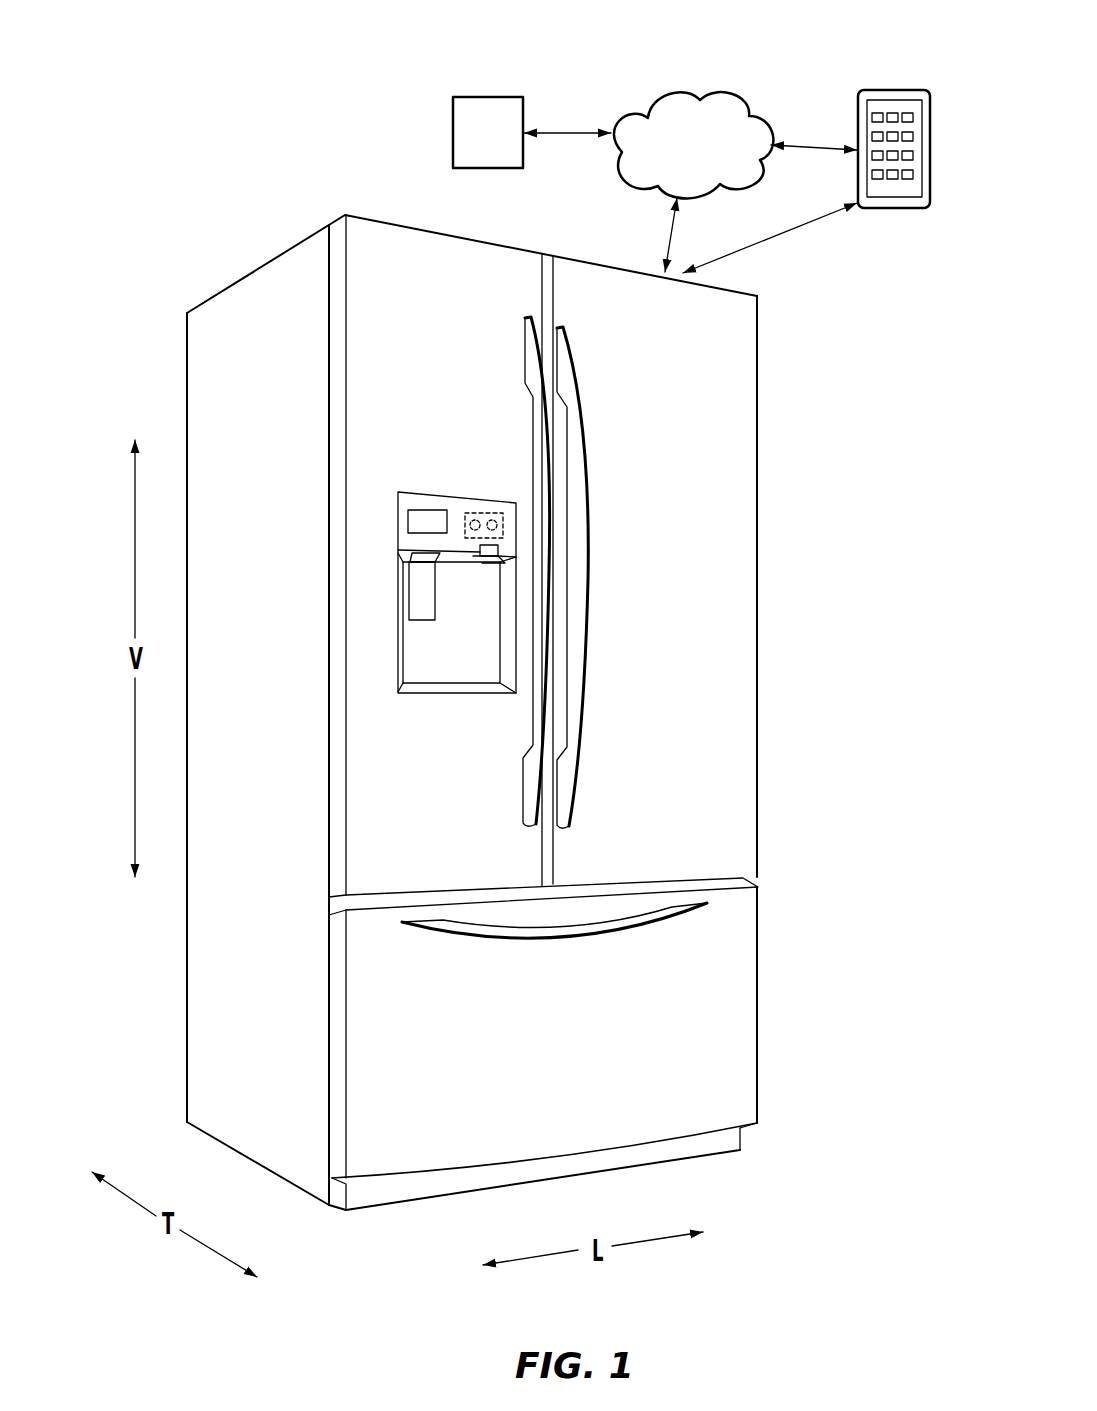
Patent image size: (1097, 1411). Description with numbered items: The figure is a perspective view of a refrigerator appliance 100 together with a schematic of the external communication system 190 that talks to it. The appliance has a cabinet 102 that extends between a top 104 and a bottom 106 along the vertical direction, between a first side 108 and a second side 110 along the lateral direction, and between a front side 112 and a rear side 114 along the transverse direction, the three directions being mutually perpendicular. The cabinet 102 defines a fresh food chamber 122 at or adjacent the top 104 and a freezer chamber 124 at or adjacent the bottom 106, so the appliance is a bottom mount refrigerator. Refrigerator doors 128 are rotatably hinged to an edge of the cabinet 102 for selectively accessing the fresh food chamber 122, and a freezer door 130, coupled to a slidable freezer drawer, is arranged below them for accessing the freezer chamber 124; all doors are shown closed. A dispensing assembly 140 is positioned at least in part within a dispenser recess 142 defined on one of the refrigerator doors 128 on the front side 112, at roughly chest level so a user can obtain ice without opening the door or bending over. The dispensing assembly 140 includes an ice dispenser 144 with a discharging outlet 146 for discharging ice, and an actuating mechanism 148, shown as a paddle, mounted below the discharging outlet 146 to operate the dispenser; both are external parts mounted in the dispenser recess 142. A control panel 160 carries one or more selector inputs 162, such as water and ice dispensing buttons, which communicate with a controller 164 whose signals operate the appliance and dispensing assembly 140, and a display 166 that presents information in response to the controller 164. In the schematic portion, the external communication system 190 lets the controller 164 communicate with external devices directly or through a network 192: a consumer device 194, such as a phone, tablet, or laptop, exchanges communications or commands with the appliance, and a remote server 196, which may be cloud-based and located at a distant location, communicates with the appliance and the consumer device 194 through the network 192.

The refrigerator appliance 100 is at (466, 691).
The cabinet 102 is at (460, 767).
The top 104 is at (442, 264).
The bottom 106 is at (431, 1120).
The first side 108 is at (543, 768).
The second side 110 is at (793, 1171).
The front side 112 is at (307, 767).
The rear side 114 is at (130, 732).
The fresh food chamber 122 is at (645, 572).
The freezer chamber 124 is at (596, 1032).
The refrigerator doors 128 is at (593, 570).
The freezer door 130 is at (554, 972).
The dispensing assembly 140 is at (459, 571).
The dispenser recess 142 is at (389, 659).
The ice dispenser 144 is at (351, 631).
The discharging outlet 146 is at (358, 560).
The actuating mechanism 148 is at (396, 655).
The control panel 160 is at (504, 565).
The selector inputs 162 is at (560, 511).
The controller 164 is at (562, 552).
The display 166 is at (436, 485).
The external communication system 190 is at (692, 136).
The network 192 is at (693, 145).
The consumer device 194 is at (895, 179).
The remote server 196 is at (488, 132).